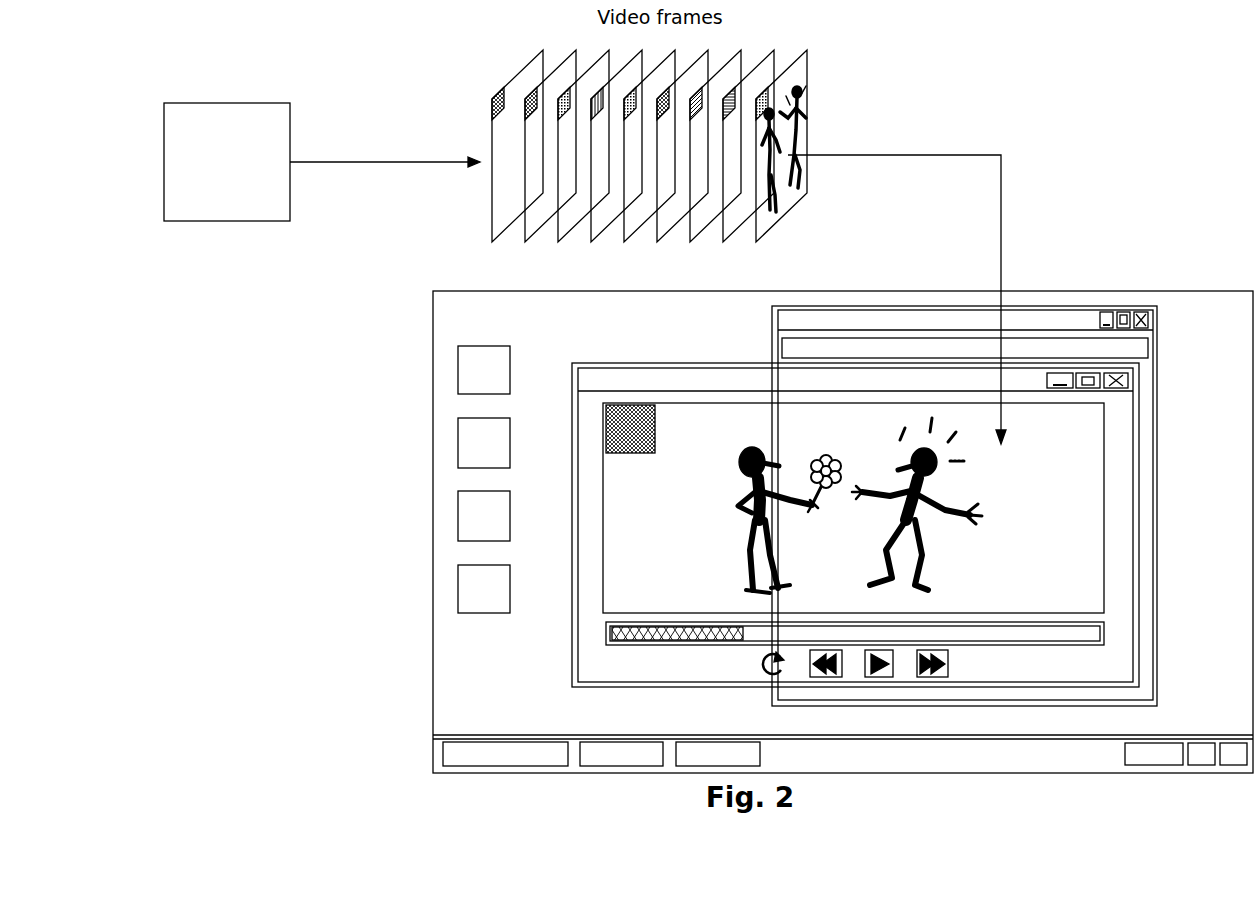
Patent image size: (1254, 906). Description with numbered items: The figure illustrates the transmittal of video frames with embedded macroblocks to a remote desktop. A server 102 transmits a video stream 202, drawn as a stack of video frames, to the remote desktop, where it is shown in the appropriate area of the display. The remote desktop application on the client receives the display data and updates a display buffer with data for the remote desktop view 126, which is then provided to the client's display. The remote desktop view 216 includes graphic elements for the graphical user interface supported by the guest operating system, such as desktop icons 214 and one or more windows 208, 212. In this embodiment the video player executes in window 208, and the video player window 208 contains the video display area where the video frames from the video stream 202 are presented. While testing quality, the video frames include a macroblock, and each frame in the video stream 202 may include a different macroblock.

The server 102 is at (235, 214).
The video stream 202 is at (660, 145).
The remote desktop view 126 is at (432, 318).
The remote desktop view 216 is at (843, 513).
The desktop icons 214 is at (503, 377).
The window 212 is at (1145, 400).
The video player window 208 is at (585, 665).